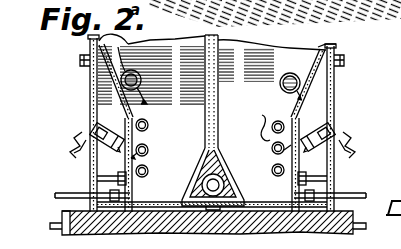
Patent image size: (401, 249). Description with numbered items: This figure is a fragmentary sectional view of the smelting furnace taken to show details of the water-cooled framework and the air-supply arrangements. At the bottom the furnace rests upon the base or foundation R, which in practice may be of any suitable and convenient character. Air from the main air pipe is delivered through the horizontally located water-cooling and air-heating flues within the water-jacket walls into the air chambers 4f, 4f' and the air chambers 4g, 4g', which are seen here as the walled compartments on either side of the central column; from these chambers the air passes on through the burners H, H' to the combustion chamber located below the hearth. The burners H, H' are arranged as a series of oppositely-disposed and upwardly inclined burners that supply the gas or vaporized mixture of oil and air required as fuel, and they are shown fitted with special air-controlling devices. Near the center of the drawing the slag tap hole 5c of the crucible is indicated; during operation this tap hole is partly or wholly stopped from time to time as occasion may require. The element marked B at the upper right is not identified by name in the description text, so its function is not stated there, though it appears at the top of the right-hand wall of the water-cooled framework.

The air chamber 4g' is at (87, 123).
The air chamber 4f' is at (154, 156).
The air chamber 4f is at (269, 156).
The air chamber 4g is at (325, 128).
The top frame bar B is at (328, 50).
The burner H' is at (75, 140).
The burner H is at (340, 140).
The slag tap hole 5c is at (226, 173).
The base or foundation R is at (62, 214).